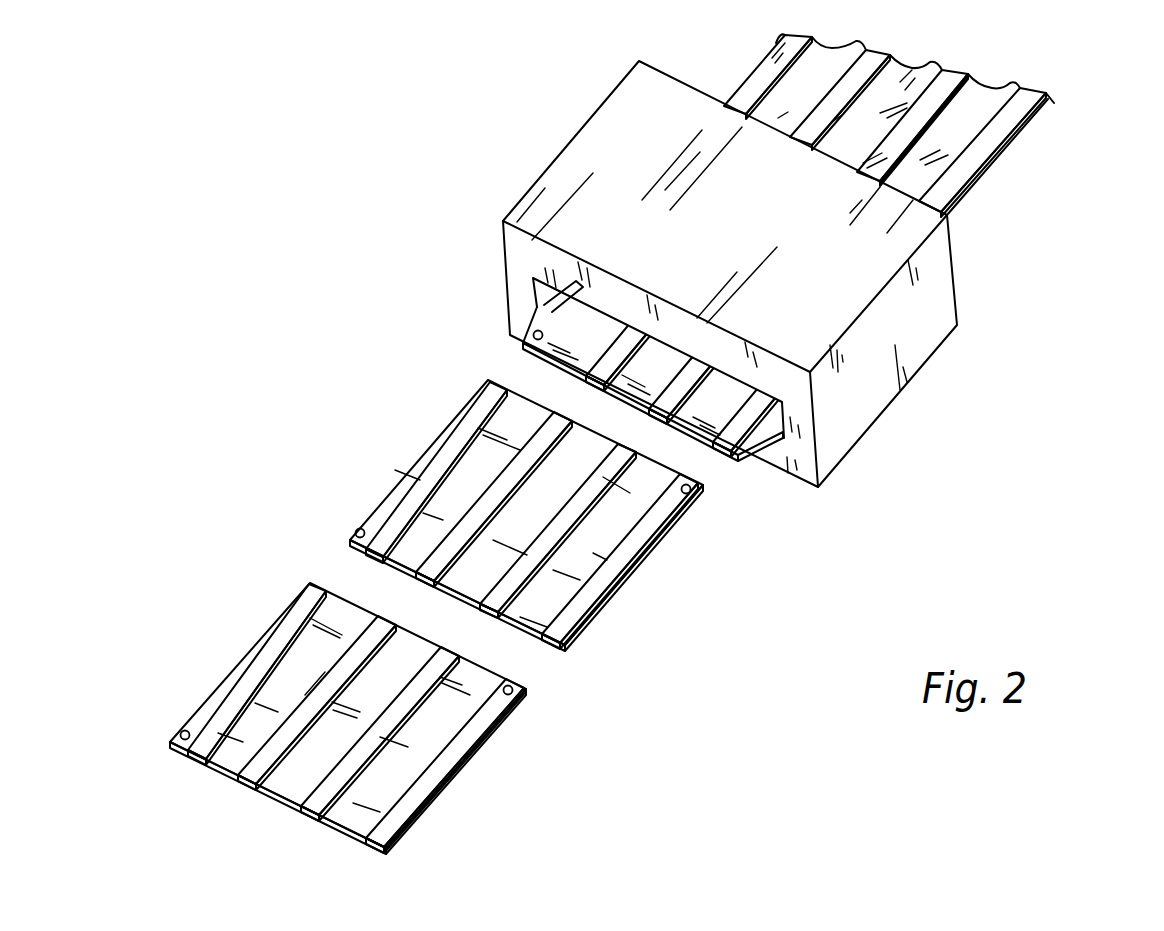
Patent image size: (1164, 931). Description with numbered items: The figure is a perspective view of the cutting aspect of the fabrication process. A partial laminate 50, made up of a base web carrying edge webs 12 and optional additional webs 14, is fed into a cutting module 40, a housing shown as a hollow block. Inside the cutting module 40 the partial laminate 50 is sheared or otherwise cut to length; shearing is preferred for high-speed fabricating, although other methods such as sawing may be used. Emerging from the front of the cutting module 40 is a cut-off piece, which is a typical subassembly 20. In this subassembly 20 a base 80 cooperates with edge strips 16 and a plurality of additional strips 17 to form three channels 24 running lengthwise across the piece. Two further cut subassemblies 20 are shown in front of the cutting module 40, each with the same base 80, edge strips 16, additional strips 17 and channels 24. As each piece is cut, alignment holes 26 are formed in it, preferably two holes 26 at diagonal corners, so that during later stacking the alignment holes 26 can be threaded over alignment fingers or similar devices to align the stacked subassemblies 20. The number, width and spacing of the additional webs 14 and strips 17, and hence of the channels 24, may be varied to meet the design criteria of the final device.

The edge webs 12 is at (755, 82).
The additional webs 14 is at (878, 44).
The edge strips 16 is at (487, 381).
The additional strips 17 is at (418, 578).
The subassembly 20 is at (485, 533).
The channels 24 is at (460, 483).
The alignment holes 26 is at (538, 335).
The cutting module 40 is at (868, 410).
The partial laminate 50 is at (916, 116).
The base 80 is at (383, 555).